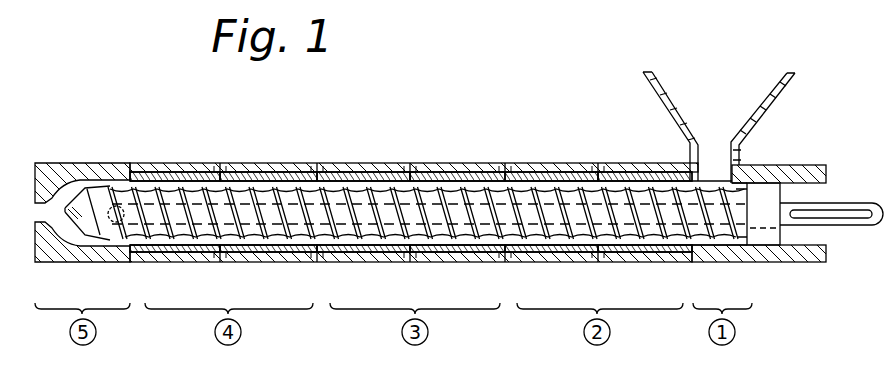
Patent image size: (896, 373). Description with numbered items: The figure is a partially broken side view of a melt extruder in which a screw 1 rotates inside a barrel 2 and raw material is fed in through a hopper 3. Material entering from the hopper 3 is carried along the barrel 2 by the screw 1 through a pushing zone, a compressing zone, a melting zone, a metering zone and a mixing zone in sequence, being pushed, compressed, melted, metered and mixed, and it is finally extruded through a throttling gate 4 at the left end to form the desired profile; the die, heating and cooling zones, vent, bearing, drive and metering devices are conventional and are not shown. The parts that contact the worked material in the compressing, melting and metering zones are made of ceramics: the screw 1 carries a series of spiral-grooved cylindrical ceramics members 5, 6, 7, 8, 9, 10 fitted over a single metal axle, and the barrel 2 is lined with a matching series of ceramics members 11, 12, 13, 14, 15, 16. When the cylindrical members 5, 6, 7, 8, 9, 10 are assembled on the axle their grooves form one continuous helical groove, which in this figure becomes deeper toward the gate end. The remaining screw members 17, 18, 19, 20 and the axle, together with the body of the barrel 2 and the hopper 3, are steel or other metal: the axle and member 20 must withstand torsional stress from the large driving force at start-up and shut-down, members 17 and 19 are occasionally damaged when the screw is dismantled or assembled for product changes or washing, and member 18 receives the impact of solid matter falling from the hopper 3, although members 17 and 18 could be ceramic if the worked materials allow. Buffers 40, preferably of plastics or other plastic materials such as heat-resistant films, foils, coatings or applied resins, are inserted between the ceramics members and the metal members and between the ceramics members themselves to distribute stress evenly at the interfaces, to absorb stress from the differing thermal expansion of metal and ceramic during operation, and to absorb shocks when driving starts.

The screw 1 is at (472, 192).
The barrel 2 is at (394, 158).
The hopper 3 is at (662, 95).
The throttling gate 4 is at (43, 192).
The cylindrical ceramics member 5 is at (655, 240).
The cylindrical ceramics member 6 is at (557, 246).
The cylindrical ceramics member 7 is at (467, 240).
The cylindrical ceramics member 8 is at (384, 228).
The cylindrical ceramics member 9 is at (288, 245).
The cylindrical ceramics member 10 is at (196, 245).
The ceramics member of the barrel 11 is at (640, 172).
The ceramics member of the barrel 12 is at (553, 172).
The ceramics member of the barrel 13 is at (456, 177).
The ceramics member of the barrel 14 is at (366, 177).
The ceramics member of the barrel 15 is at (271, 177).
The ceramics member of the barrel 16 is at (186, 176).
The metal member of the screw 17 is at (107, 233).
The metal member of the screw 18 is at (722, 237).
The metal member of the screw 19 is at (768, 240).
The metal member of the screw 20 is at (868, 227).
The buffer 40 is at (305, 176).